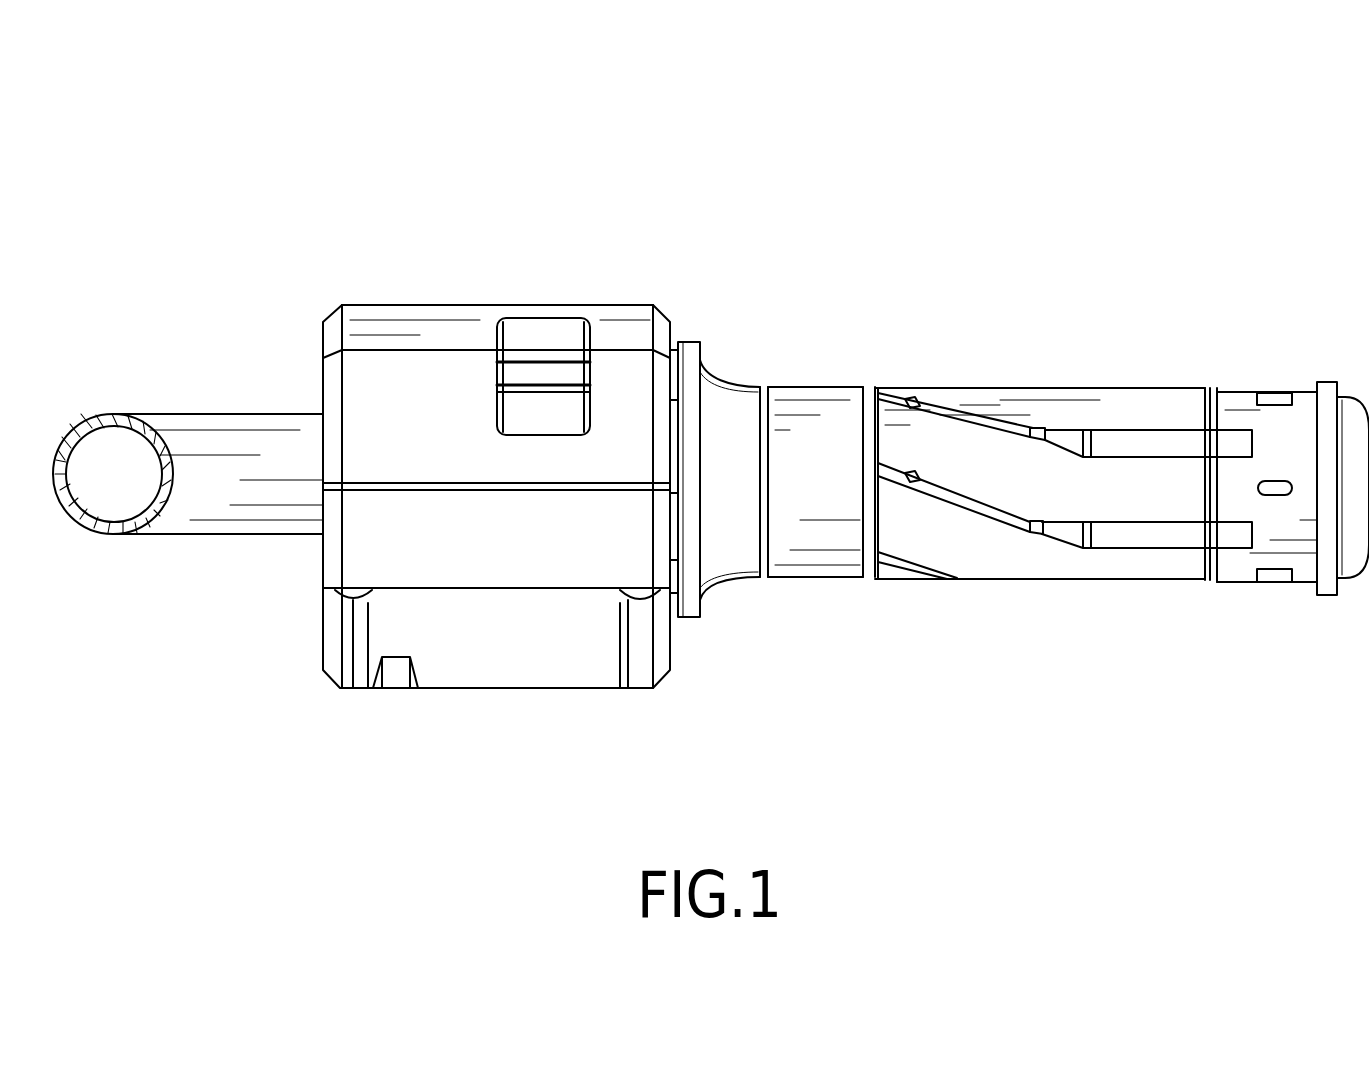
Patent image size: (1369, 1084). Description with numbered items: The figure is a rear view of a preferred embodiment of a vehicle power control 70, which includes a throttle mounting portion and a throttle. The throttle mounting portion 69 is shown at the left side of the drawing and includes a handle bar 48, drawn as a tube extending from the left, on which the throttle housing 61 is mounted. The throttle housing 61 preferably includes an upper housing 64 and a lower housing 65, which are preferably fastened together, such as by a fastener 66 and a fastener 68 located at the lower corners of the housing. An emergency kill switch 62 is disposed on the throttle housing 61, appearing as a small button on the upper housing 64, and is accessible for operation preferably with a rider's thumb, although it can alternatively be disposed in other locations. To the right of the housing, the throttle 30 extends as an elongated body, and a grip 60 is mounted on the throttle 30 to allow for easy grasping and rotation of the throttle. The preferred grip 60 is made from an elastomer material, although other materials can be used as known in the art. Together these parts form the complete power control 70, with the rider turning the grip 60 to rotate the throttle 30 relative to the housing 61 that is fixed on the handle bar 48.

The throttle mounting portion 69 is at (256, 344).
The handle bar 48 is at (225, 522).
The throttle housing 61 is at (462, 328).
The upper housing 64 is at (393, 333).
The emergency kill switch 62 is at (550, 340).
The lower housing 65 is at (545, 660).
The fastener 66 is at (322, 617).
The fastener 68 is at (648, 605).
The vehicle power control 70 is at (784, 292).
The throttle 30 is at (1062, 482).
The grip 60 is at (1032, 555).